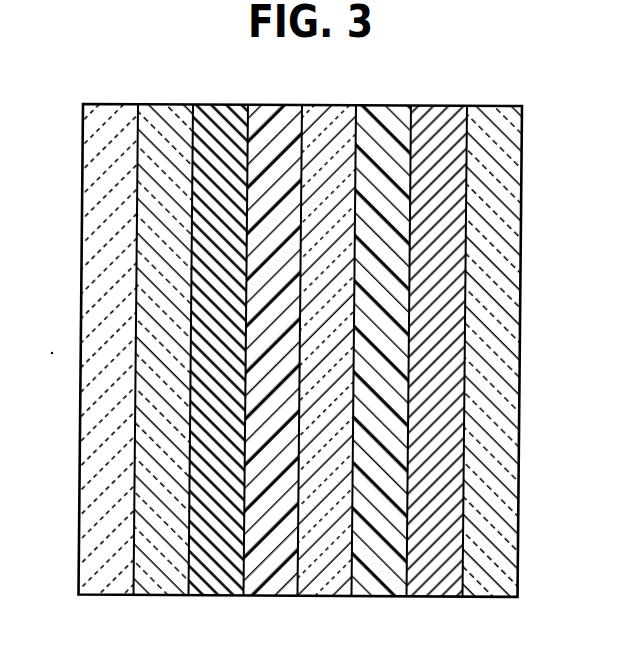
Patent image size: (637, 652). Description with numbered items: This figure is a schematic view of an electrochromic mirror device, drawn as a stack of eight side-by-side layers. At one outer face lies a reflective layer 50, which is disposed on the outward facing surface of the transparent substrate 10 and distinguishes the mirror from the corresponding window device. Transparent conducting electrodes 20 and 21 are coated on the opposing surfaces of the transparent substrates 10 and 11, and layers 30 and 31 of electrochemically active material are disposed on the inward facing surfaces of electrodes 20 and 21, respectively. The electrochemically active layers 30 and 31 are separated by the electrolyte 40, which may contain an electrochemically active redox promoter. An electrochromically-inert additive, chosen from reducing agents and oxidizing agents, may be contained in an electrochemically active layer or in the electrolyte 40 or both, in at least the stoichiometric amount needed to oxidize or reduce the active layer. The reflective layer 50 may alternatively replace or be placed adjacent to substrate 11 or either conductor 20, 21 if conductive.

The reflective layer 50 is at (112, 104).
The transparent substrate 10 is at (165, 595).
The transparent conducting electrode 20 is at (230, 104).
The electrochemically active layer 30 is at (275, 596).
The electrolyte 40 is at (330, 105).
The electrochemically active layer 31 is at (383, 596).
The transparent conducting electrode 21 is at (437, 106).
The transparent substrate 11 is at (500, 597).